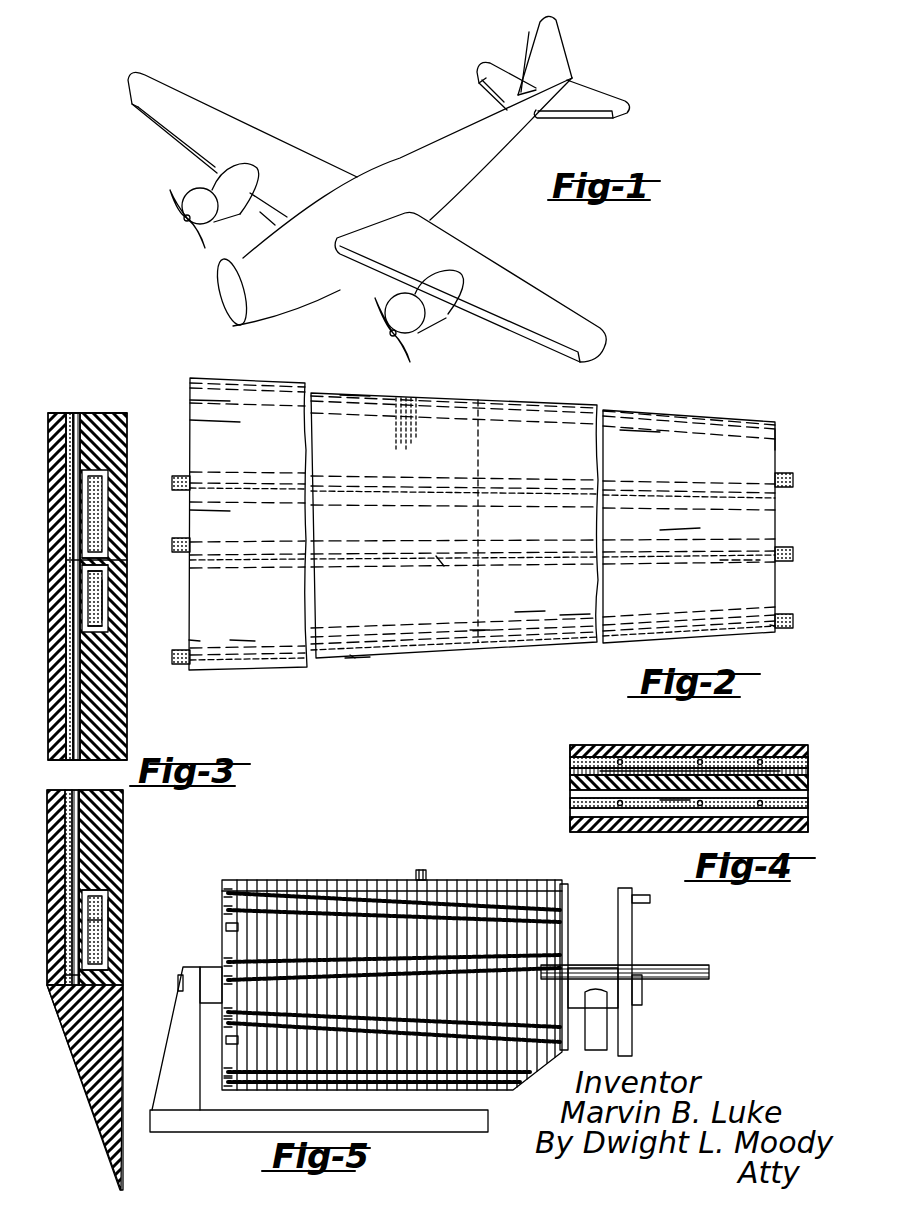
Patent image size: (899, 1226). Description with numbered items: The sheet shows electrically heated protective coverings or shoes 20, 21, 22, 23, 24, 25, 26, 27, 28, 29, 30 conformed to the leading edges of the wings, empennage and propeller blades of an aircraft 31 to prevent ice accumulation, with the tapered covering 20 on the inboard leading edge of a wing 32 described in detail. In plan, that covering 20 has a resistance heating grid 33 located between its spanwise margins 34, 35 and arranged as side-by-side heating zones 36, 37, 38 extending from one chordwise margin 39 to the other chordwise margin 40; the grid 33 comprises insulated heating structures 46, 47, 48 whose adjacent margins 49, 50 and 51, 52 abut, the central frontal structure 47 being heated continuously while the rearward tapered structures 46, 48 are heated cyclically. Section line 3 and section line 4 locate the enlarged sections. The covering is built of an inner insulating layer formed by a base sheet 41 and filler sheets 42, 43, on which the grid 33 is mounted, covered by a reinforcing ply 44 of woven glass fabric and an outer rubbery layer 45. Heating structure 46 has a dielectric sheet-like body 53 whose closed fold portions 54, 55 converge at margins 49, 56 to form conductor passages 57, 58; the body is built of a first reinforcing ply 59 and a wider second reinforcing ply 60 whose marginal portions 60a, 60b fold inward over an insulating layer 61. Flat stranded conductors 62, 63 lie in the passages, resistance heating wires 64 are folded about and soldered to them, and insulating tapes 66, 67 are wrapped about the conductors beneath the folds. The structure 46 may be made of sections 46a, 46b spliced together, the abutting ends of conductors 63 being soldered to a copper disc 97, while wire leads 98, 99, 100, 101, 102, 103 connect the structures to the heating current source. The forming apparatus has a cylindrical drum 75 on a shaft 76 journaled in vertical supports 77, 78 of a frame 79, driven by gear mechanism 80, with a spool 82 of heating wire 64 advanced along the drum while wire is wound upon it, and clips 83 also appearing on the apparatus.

In FIG. 1, the protective covering 20 is at (392, 278).
In FIG. 2, the protective covering 20 is at (690, 411).
In FIG. 1, the protective covering 21 is at (540, 347).
In FIG. 1, the protective covering 22 is at (222, 262).
In FIG. 1, the protective covering 23 is at (178, 147).
In FIG. 1, the protective covering 24 is at (580, 118).
In FIG. 1, the protective covering 25 is at (484, 94).
In FIG. 1, the protective covering 26 is at (522, 42).
In FIG. 1, the protective covering 27 is at (170, 202).
In FIG. 1, the protective covering 28 is at (213, 226).
In FIG. 1, the protective covering 29 is at (378, 313).
In FIG. 1, the protective covering 30 is at (412, 336).
In FIG. 1, the aircraft 31 is at (408, 137).
In FIG. 1, the wing 32 is at (495, 274).
In FIG. 2, the resistance heating grid 33 is at (422, 397).
In FIG. 2, the spanwise margin 34 is at (355, 395).
In FIG. 2, the spanwise margin 35 is at (356, 652).
In FIG. 2, the heating zone 36 is at (576, 620).
In FIG. 2, the heating zone 37 is at (680, 520).
In FIG. 2, the heating zone 38 is at (633, 447).
In FIG. 2, the chordwise margin 39 is at (190, 414).
In FIG. 2, the chordwise margin 40 is at (778, 437).
In FIG. 3, the base sheet 41 is at (118, 413).
In FIG. 4, the base sheet 41 is at (572, 828).
In FIG. 3, the filler sheet 42 is at (103, 413).
In FIG. 3, the filler sheet 43 is at (92, 413).
In FIG. 3, the reinforcing ply 44 is at (68, 413).
In FIG. 4, the reinforcing ply 44 is at (570, 757).
In FIG. 3, the outer layer 45 is at (53, 413).
In FIG. 4, the outer layer 45 is at (625, 745).
In FIG. 3, the heating structure 46 is at (110, 612).
In FIG. 2, the heating structure section 46a is at (245, 632).
In FIG. 3, the heating structure section 46a is at (75, 978).
In FIG. 4, the heating structure section 46a is at (652, 760).
In FIG. 2, the heating structure section 46b is at (530, 605).
In FIG. 4, the heating structure section 46b is at (755, 800).
In FIG. 2, the heating structure 47 is at (206, 518).
In FIG. 3, the heating structure 47 is at (50, 420).
In FIG. 2, the heating structure 48 is at (218, 426).
In FIG. 2, the margin 49 is at (393, 562).
In FIG. 3, the margin 49 is at (112, 562).
In FIG. 2, the margin 50 is at (392, 557).
In FIG. 3, the margin 50 is at (60, 552).
In FIG. 2, the margin 51 is at (400, 494).
In FIG. 2, the margin 52 is at (393, 485).
In FIG. 3, the sheet-like body 53 is at (70, 762).
In FIG. 3, the fold portion 54 is at (112, 940).
In FIG. 3, the fold portion 55 is at (118, 603).
In FIG. 2, the margin 56 is at (350, 660).
In FIG. 3, the margin 56 is at (62, 996).
In FIG. 2, the conductor passage 57 is at (388, 648).
In FIG. 2, the conductor passage 58 is at (440, 566).
In FIG. 3, the first reinforcing ply 59 is at (72, 454).
In FIG. 4, the first reinforcing ply 59 is at (572, 772).
In FIG. 5, the first reinforcing ply 59 is at (492, 886).
In FIG. 3, the second reinforcing ply 60 is at (60, 480).
In FIG. 4, the second reinforcing ply 60 is at (572, 762).
In FIG. 3, the marginal portion 60a is at (112, 580).
In FIG. 3, the marginal portion 60b is at (112, 978).
In FIG. 3, the insulating layer 61 is at (85, 725).
In FIG. 4, the insulating layer 61 is at (572, 782).
In FIG. 2, the wire conductor 62 is at (745, 575).
In FIG. 3, the wire conductor 62 is at (88, 607).
In FIG. 5, the wire conductor 62 is at (505, 973).
In FIG. 2, the wire conductor 63 is at (190, 652).
In FIG. 3, the wire conductor 63 is at (110, 896).
In FIG. 4, the wire conductor 63 is at (812, 800).
In FIG. 5, the wire conductor 63 is at (480, 1026).
In FIG. 3, the resistance heating wire 64 is at (70, 520).
In FIG. 4, the resistance heating wire 64 is at (700, 760).
In FIG. 5, the resistance heating wire 64 is at (298, 882).
In FIG. 3, the insulating tape 66 is at (110, 912).
In FIG. 4, the insulating tape 66 is at (810, 760).
In FIG. 3, the insulating tape 67 is at (110, 622).
In FIG. 5, the drum 75 is at (566, 884).
In FIG. 5, the shaft 76 is at (178, 985).
In FIG. 5, the vertical support 77 is at (186, 1020).
In FIG. 5, the vertical support 78 is at (605, 1020).
In FIG. 5, the frame 79 is at (236, 1122).
In FIG. 5, the gear mechanism 80 is at (636, 956).
In FIG. 5, the spool 82 is at (428, 876).
In FIG. 5, the clip 83 is at (226, 928).
In FIG. 2, the conductive metal disc 97 is at (478, 650).
In FIG. 4, the conductive metal disc 97 is at (672, 808).
In FIG. 2, the wire lead 98 is at (796, 621).
In FIG. 2, the wire lead 99 is at (160, 657).
In FIG. 2, the wire lead 100 is at (796, 554).
In FIG. 2, the wire lead 101 is at (176, 546).
In FIG. 2, the wire lead 102 is at (796, 480).
In FIG. 2, the wire lead 103 is at (176, 485).
In FIG. 2, the section line 3— 3 is at (256, 699).
In FIG. 2, the section line 4— 4 is at (507, 620).